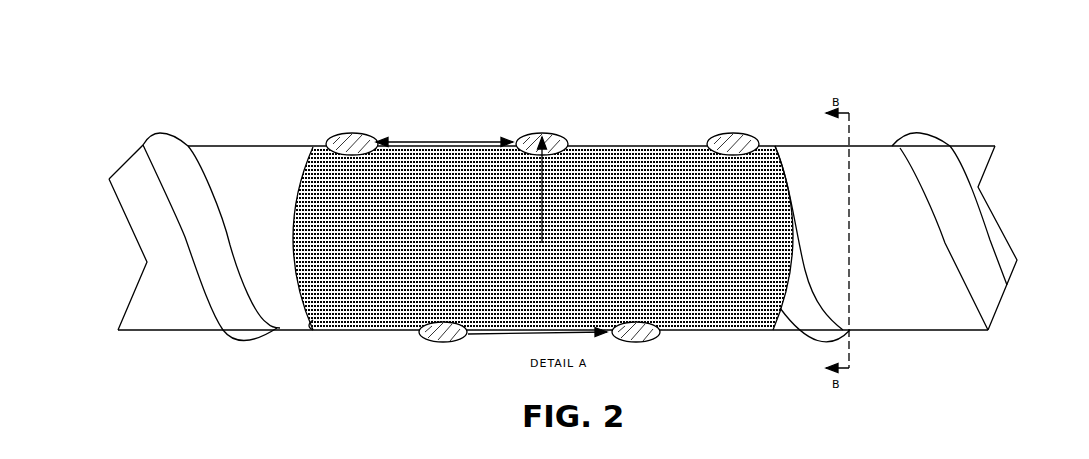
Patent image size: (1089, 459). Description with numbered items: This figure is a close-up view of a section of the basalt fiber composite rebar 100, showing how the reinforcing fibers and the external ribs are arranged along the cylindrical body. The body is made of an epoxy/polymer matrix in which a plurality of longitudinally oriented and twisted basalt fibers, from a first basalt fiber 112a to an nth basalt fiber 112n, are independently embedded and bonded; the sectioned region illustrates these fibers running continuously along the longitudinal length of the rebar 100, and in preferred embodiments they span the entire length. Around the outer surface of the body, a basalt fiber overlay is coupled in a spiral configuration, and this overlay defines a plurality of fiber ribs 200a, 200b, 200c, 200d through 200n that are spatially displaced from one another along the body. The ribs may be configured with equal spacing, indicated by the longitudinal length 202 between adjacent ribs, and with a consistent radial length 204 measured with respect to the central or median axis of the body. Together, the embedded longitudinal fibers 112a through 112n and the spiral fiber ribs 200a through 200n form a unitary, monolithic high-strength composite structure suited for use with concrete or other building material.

The composite rebar 100 is at (189, 324).
The basalt fiber 112a is at (327, 147).
The basalt fiber 112n is at (327, 332).
The fiber rib 200a is at (181, 139).
The fiber rib 200b is at (374, 142).
The fiber rib 200c is at (567, 138).
The fiber rib 200d is at (746, 133).
The fiber rib 200n is at (952, 138).
The longitudinal length 202 is at (447, 142).
The radial length 204 is at (543, 170).